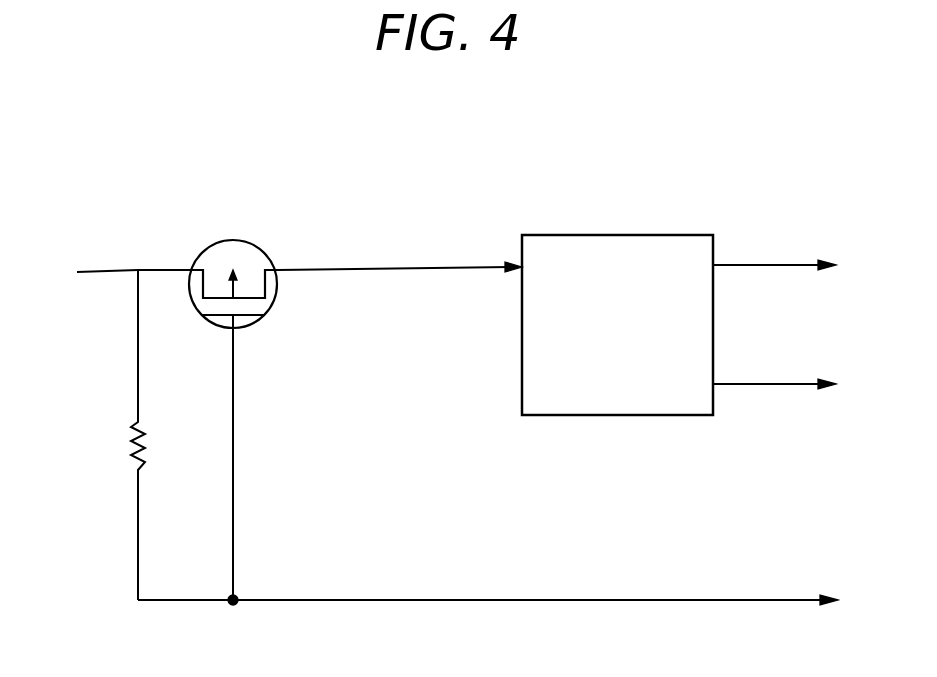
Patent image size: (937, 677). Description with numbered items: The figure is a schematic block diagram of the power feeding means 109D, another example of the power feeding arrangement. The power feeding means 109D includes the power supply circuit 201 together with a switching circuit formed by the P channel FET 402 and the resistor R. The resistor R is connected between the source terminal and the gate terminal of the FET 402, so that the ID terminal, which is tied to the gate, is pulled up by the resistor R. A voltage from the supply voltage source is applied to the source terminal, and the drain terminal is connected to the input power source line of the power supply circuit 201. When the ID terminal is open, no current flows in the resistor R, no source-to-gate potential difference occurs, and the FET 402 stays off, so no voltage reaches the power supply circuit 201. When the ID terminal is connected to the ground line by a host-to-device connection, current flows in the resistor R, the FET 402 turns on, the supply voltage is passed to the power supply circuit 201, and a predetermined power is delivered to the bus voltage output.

The power feeding means 109D is at (567, 129).
The P channel FET 402 is at (232, 240).
The power supply circuit 201 is at (625, 235).
The resistor R is at (151, 435).